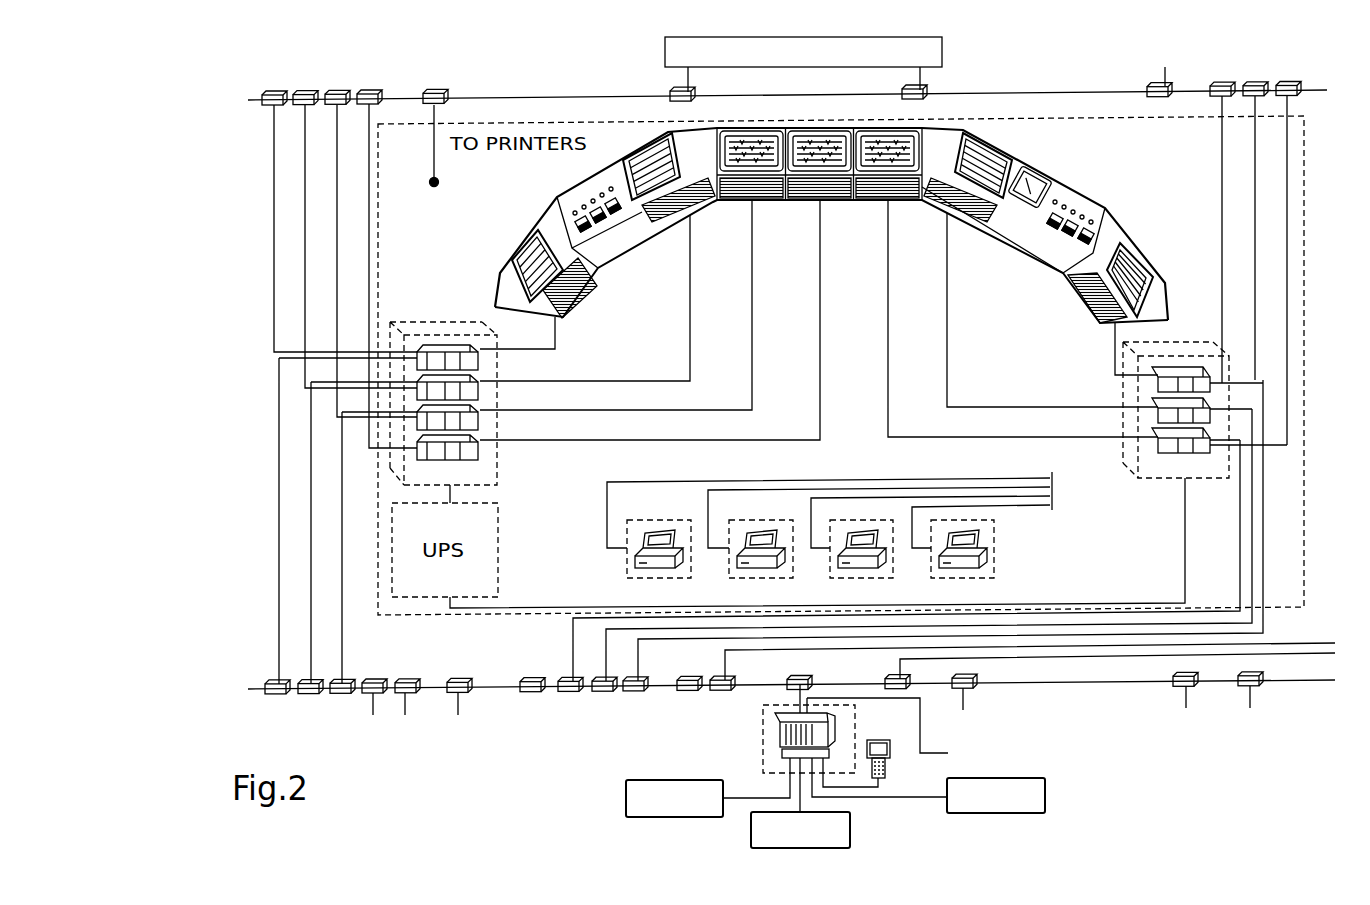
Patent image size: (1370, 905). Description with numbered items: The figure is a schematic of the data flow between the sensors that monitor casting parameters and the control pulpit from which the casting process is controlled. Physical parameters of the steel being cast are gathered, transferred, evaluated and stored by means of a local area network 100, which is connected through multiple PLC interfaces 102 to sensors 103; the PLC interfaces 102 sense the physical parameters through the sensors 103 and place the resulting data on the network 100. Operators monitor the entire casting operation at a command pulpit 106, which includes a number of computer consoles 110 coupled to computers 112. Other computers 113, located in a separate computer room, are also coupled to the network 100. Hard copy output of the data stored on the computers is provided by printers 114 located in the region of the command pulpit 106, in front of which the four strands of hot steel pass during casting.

The local area network 100 is at (1060, 93).
The PLC interface 102 is at (763, 735).
The sensor 103 is at (688, 782).
The command pulpit 106 is at (875, 250).
The computer console 110 is at (598, 182).
The computer 112 is at (497, 368).
The computer 113 is at (942, 51).
The printer 114 is at (1020, 557).